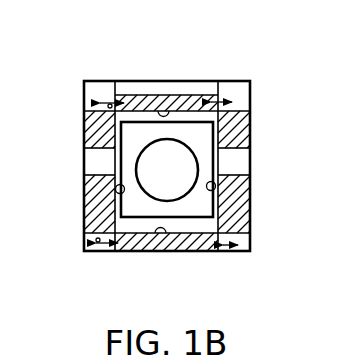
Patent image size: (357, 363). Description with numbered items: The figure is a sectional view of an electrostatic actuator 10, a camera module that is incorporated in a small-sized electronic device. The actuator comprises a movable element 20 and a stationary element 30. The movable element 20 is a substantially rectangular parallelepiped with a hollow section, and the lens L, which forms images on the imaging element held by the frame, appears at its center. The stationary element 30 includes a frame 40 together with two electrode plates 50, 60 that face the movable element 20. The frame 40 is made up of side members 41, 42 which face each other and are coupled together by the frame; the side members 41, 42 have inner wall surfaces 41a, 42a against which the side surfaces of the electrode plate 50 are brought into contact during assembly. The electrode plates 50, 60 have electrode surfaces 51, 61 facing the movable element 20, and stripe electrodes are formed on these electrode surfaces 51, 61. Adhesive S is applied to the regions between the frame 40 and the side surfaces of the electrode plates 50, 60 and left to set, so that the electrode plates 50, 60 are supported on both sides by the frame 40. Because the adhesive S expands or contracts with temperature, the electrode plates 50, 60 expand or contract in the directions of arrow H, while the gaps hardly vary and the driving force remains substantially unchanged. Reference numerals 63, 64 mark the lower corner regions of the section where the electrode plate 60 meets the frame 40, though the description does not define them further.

The electrostatic actuator 10 is at (265, 133).
The movable element 20 is at (195, 215).
The stationary element 30 is at (252, 88).
The frame 40 is at (251, 222).
The side member 41 is at (84, 126).
The inner wall surface 41a is at (116, 189).
The side member 42 is at (250, 118).
The inner wall surface 42a is at (216, 187).
The electrode plate 50 is at (150, 100).
The electrode surface 51 is at (164, 106).
The electrode plate 60 is at (127, 253).
The electrode surface 61 is at (172, 253).
The lower left corner portion 63 is at (100, 252).
The lower right corner portion 64 is at (244, 252).
The lens L is at (190, 161).
The adhesive S is at (113, 97).
The arrow H is at (225, 98).